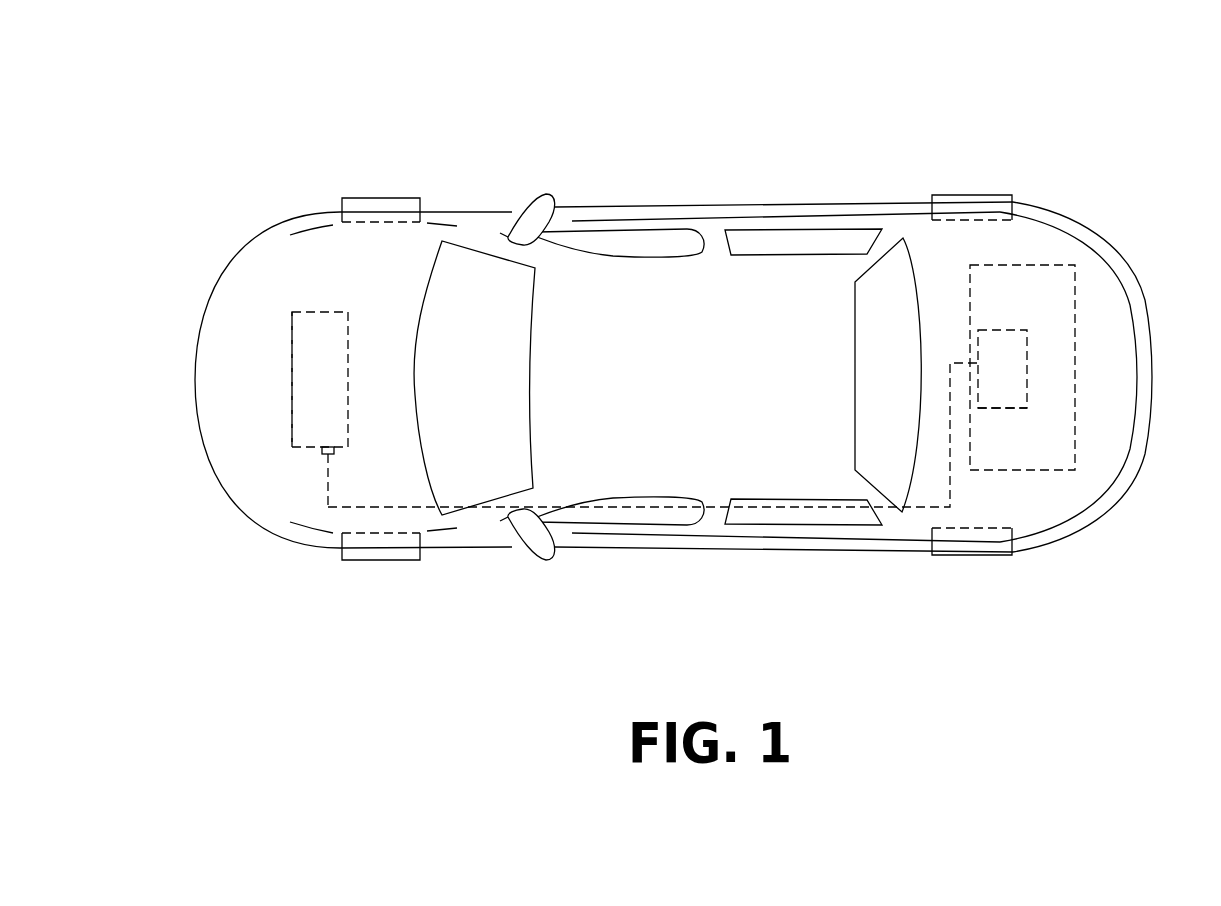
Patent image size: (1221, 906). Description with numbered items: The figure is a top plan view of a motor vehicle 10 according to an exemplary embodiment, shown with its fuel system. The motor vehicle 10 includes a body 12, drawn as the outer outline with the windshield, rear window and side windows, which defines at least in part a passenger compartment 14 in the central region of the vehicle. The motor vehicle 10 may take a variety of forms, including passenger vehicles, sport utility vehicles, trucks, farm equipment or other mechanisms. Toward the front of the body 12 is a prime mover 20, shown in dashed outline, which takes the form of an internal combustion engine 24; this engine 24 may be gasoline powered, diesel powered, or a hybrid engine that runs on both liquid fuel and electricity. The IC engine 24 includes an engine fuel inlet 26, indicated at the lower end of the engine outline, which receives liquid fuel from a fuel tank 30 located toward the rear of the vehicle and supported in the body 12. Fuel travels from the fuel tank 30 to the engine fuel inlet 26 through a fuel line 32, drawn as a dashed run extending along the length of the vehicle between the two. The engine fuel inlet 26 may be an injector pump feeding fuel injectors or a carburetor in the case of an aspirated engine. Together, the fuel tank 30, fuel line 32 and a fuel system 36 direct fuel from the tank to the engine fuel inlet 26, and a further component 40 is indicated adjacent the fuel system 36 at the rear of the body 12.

The motor vehicle 10 is at (318, 138).
The body 12 is at (879, 238).
The passenger compartment 14 is at (680, 300).
The prime mover 20 is at (282, 368).
The internal combustion engine 24 is at (292, 407).
The engine fuel inlet 26 is at (327, 452).
The fuel tank 30 is at (1078, 318).
The fuel line 32 is at (432, 508).
The fuel system 36 is at (1037, 377).
The connection port 40 is at (1003, 410).